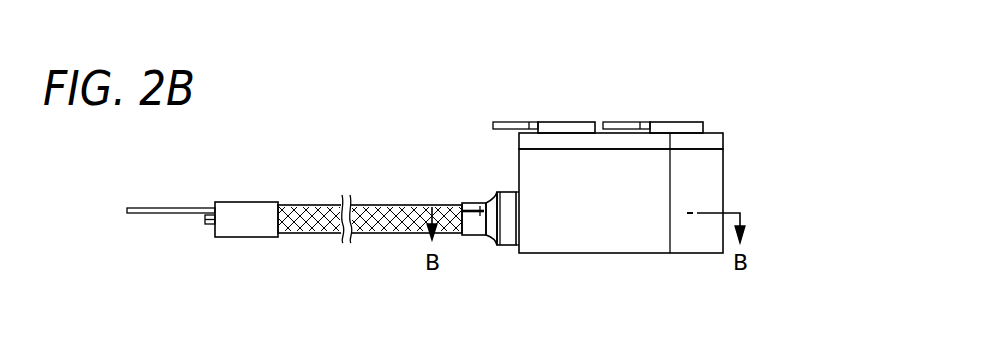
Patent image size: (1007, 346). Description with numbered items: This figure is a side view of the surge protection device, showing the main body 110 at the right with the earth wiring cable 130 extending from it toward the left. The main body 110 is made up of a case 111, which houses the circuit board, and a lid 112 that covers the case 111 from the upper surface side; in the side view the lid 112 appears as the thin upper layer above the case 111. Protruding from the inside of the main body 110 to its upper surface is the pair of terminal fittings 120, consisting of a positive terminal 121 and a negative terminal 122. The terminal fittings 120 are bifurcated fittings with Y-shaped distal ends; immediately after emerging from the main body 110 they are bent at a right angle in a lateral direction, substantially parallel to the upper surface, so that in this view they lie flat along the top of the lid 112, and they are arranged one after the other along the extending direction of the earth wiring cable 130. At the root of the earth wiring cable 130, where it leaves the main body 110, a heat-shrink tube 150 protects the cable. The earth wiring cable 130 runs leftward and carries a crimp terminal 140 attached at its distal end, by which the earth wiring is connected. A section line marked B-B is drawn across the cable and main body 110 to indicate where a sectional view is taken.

The main body 110 is at (698, 192).
The case 111 is at (717, 185).
The lid 112 is at (718, 142).
The terminal fittings 120 is at (601, 81).
The positive terminal 121 is at (653, 105).
The negative terminal 122 is at (562, 128).
The earth wiring cable 130 is at (370, 222).
The crimp terminal 140 is at (235, 223).
The heat-shrink tube 150 is at (473, 228).